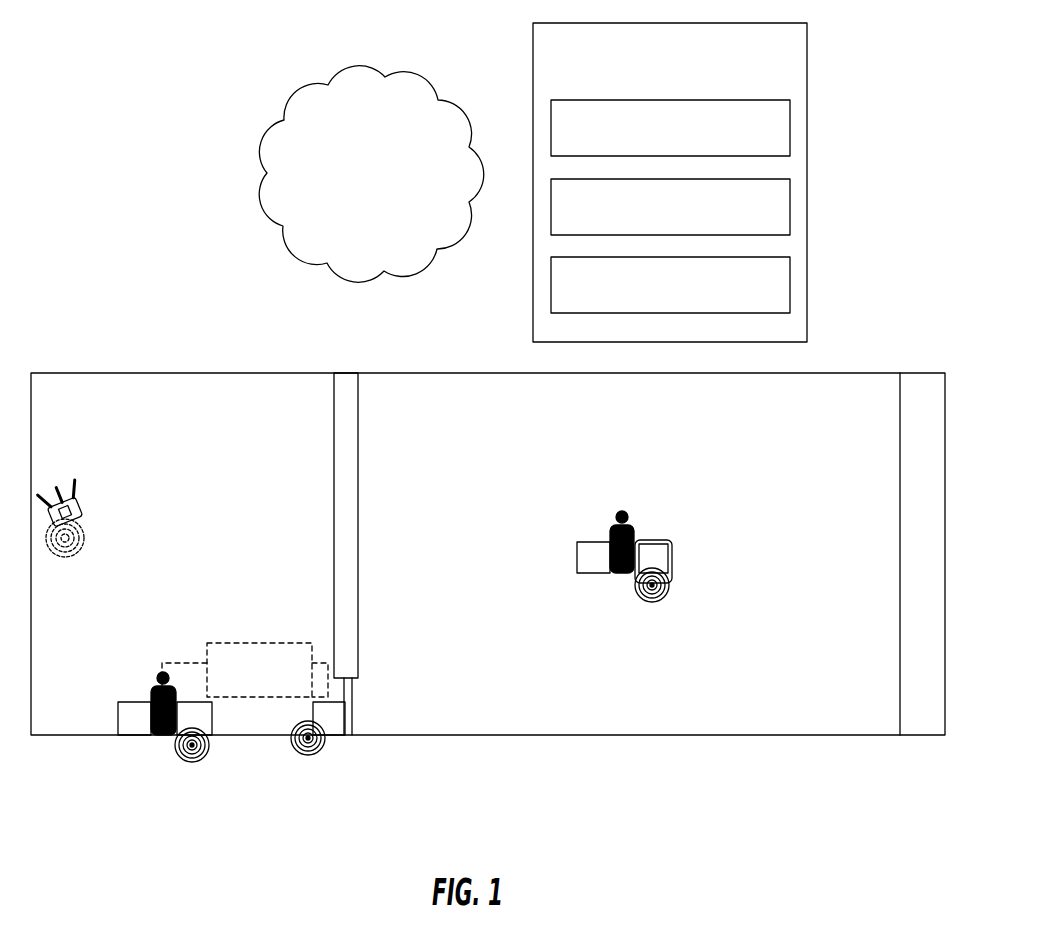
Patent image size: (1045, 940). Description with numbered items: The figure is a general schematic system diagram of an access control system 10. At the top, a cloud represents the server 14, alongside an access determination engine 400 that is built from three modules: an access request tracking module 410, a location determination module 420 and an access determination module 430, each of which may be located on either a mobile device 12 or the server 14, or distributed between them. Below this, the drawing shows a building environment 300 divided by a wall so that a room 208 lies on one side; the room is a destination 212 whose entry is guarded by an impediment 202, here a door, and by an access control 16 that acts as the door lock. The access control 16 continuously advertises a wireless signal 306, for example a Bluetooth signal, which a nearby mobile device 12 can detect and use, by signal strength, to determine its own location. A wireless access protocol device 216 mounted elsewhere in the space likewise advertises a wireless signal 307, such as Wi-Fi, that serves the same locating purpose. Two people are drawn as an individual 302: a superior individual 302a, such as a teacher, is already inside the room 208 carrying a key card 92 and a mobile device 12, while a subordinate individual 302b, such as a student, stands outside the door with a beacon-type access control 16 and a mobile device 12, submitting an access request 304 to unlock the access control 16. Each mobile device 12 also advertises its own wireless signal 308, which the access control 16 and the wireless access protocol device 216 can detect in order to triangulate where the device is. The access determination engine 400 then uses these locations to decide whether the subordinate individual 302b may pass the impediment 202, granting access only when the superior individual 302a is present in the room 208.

The access control system 10 is at (71, 240).
The server 14 is at (380, 197).
The access determination engine 400 is at (542, 44).
The access request tracking module 410 is at (786, 103).
The location determination module 420 is at (786, 182).
The access determination module 430 is at (786, 260).
The environment 300 is at (393, 790).
The room 208 is at (625, 697).
The destination 212 is at (399, 677).
The impediment 202 is at (352, 735).
The wireless signal 306 is at (296, 748).
The access control 16 is at (231, 718).
The wireless access protocol device 216 is at (78, 492).
The wireless signal 307 is at (66, 557).
The access request 304 is at (251, 642).
The individual 302 is at (165, 655).
The superior individual 302a is at (620, 577).
The subordinate individual 302b is at (162, 739).
The mobile device 12 is at (424, 637).
The key card 92 is at (593, 557).
The wireless signal 308 is at (194, 751).